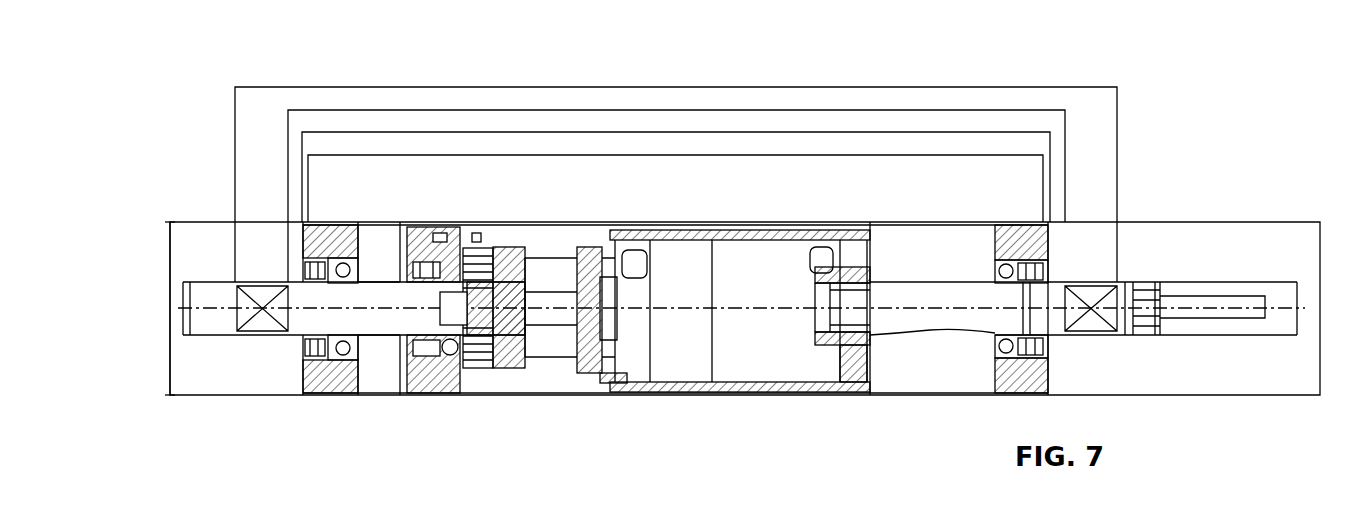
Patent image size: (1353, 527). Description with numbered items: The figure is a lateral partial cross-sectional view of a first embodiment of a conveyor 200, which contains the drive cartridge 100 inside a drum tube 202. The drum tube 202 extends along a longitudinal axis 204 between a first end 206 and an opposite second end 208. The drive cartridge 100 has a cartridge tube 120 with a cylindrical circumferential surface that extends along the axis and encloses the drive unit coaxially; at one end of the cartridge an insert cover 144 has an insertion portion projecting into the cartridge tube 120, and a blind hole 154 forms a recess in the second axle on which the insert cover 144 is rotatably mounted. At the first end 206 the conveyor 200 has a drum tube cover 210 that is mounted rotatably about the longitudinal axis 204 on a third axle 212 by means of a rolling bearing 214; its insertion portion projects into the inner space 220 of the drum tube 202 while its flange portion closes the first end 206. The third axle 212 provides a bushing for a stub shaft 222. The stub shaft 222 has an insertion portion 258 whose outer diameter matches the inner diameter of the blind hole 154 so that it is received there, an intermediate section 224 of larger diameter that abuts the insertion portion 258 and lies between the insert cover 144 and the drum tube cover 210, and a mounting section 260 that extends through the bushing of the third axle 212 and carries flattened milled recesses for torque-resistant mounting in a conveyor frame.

The drive cartridge 100 is at (893, 380).
The cartridge tube 120 is at (900, 228).
The insert cover 144 is at (427, 360).
The blind hole 154 is at (450, 288).
The conveyor 200 is at (708, 417).
The drum tube 202 is at (378, 396).
The longitudinal axis 204 is at (790, 310).
The first end 206 is at (292, 374).
The second end 208 is at (1050, 338).
The drum tube cover 210 is at (325, 242).
The third axle 212 is at (355, 316).
The rolling bearing 214 is at (352, 268).
The inner space 220 is at (413, 248).
The stub shaft 222 is at (258, 282).
The intermediate section 224 is at (377, 295).
The insertion portion 258 is at (433, 317).
The mounting section 260 is at (258, 336).